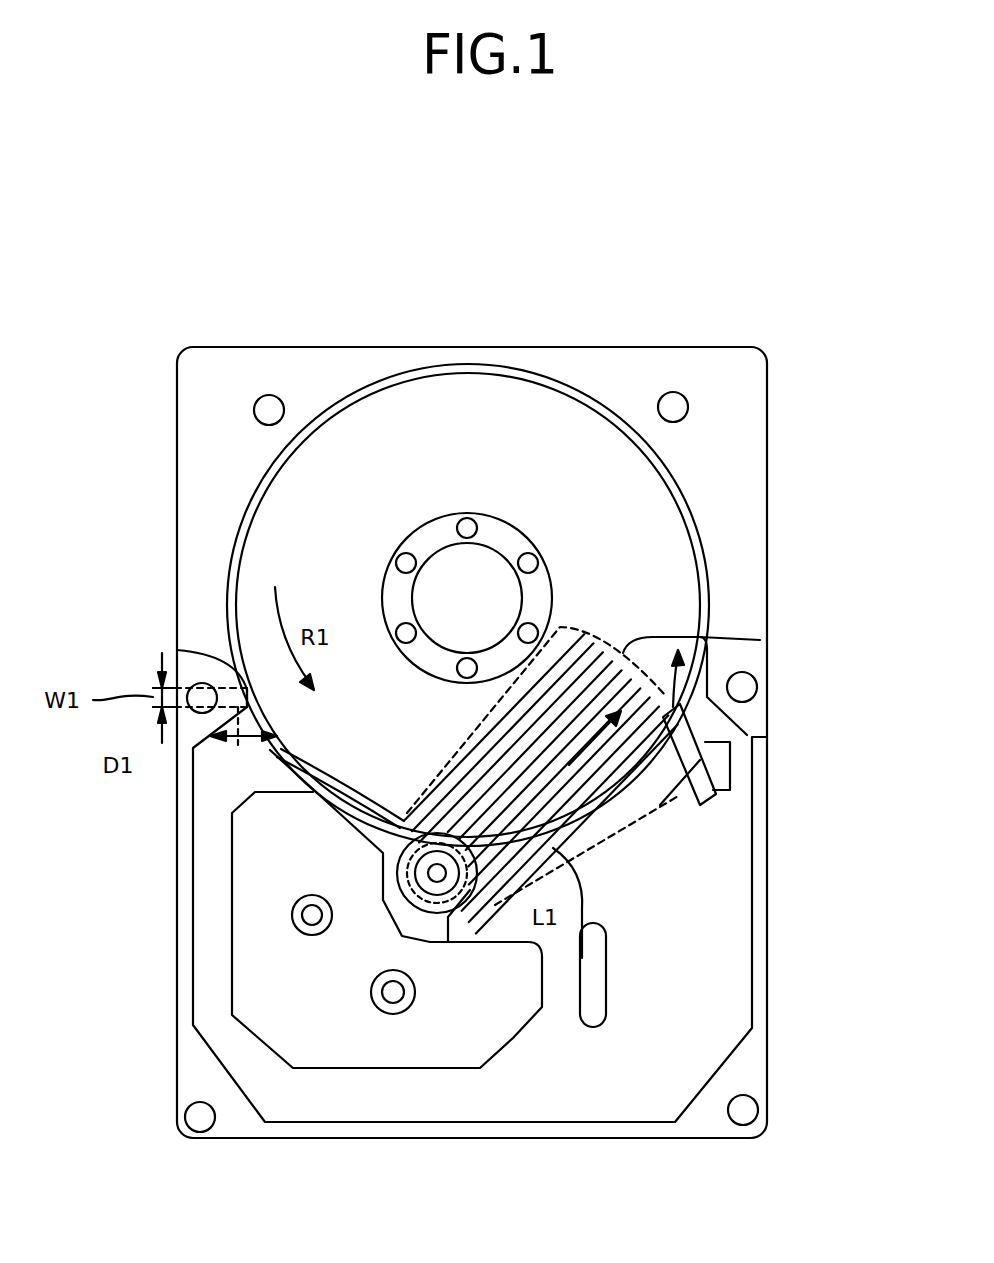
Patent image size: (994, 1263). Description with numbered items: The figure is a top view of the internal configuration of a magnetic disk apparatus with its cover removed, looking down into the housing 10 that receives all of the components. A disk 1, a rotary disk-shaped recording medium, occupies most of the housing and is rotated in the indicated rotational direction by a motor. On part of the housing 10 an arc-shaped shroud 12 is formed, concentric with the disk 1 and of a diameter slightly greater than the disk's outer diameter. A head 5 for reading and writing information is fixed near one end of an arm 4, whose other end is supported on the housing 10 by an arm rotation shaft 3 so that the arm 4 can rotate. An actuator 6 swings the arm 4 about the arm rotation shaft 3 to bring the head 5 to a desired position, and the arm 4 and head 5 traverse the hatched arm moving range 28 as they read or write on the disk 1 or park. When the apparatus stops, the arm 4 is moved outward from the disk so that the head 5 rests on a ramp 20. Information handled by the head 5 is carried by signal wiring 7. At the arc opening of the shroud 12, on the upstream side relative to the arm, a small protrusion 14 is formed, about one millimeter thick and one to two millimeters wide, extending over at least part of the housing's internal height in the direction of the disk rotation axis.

The disk 1 is at (660, 573).
The arm rotation shaft 3 is at (437, 873).
The arm 4 is at (538, 867).
The head 5 is at (760, 640).
The actuator 6 is at (513, 1038).
The signal wiring 7 is at (577, 883).
The housing 10 is at (747, 478).
The shroud 12 is at (661, 458).
The protrusion 14 is at (232, 678).
The ramp 20 is at (750, 737).
The arm moving range 28 is at (660, 803).